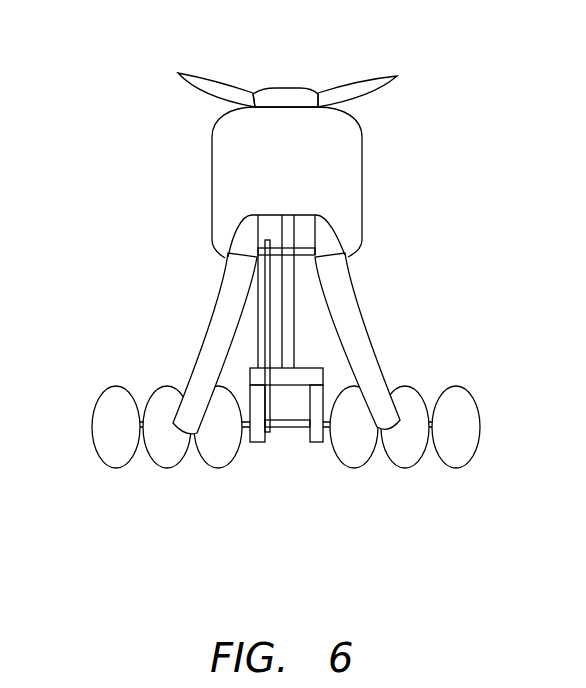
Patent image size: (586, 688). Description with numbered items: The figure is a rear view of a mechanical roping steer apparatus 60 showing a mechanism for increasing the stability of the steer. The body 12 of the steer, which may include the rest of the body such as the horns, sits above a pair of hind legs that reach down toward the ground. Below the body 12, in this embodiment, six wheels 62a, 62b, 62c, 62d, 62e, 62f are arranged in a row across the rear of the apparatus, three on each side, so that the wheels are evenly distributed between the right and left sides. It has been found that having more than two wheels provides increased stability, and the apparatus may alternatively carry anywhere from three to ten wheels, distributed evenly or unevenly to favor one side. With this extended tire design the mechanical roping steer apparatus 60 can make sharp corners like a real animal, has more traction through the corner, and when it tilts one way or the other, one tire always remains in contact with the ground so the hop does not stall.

The mechanical roping steer apparatus 60 is at (362, 83).
The body 12 is at (362, 178).
The wheel 62a is at (458, 467).
The wheel 62b is at (403, 467).
The wheel 62c is at (353, 467).
The wheel 62d is at (217, 467).
The wheel 62e is at (168, 467).
The wheel 62f is at (103, 463).